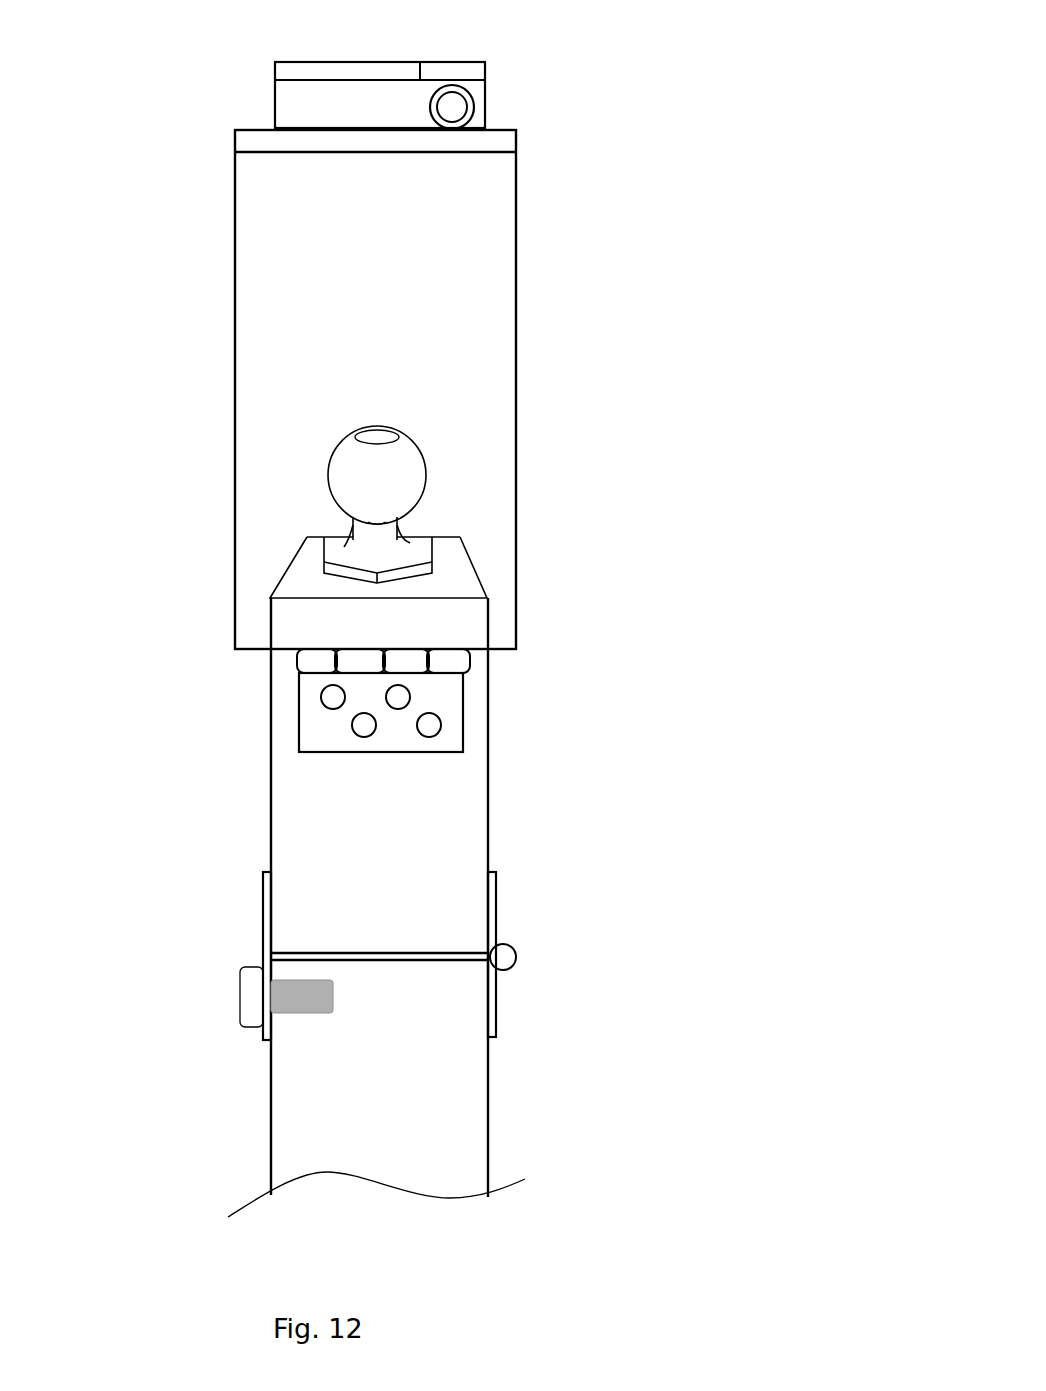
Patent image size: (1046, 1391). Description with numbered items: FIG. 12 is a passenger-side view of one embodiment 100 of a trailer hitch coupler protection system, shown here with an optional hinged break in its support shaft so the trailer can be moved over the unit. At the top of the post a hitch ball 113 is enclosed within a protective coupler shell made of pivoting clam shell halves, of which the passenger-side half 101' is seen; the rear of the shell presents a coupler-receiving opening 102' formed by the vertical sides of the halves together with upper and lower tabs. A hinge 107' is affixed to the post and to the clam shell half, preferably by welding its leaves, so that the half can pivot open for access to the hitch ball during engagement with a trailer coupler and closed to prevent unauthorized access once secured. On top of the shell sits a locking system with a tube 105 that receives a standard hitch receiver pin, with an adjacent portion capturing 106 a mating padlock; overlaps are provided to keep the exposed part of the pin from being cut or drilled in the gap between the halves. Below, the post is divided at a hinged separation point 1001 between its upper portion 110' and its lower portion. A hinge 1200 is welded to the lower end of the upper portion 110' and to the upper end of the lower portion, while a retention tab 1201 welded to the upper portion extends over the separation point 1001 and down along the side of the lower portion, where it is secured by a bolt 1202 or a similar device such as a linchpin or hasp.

The embodiment 100 is at (672, 96).
The padlock capturing portion 106 is at (333, 98).
The tube 105 is at (487, 108).
The clam shell half 101' is at (375, 389).
The coupler-receiving opening 102' is at (165, 329).
The hitch ball 113 is at (399, 493).
The hinge 107' is at (449, 709).
The upper section of the post 110' is at (379, 775).
The hinged separation point 1001 is at (390, 968).
The retention tab 1201 is at (263, 920).
The bolt 1202 is at (250, 995).
The hinge 1200 is at (518, 962).